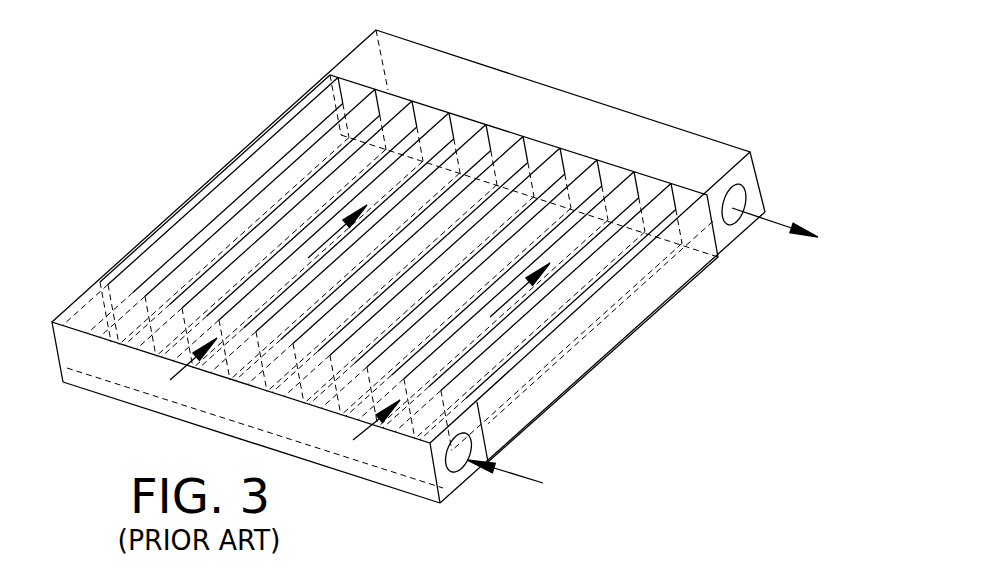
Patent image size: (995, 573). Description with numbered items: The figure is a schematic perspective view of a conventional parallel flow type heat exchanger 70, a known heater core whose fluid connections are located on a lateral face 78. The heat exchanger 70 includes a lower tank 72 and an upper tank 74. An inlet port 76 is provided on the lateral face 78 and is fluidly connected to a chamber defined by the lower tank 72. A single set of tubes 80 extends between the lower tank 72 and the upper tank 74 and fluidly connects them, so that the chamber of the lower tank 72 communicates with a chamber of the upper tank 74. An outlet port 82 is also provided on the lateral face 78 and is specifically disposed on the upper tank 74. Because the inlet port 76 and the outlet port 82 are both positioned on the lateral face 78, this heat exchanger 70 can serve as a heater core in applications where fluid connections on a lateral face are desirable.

The parallel flow type heat exchanger 70 is at (681, 361).
The lower tank 72 is at (100, 404).
The upper tank 74 is at (573, 86).
The inlet port 76 is at (461, 471).
The lateral face 78 is at (581, 379).
The set of tubes 80 is at (641, 185).
The outlet port 82 is at (745, 190).